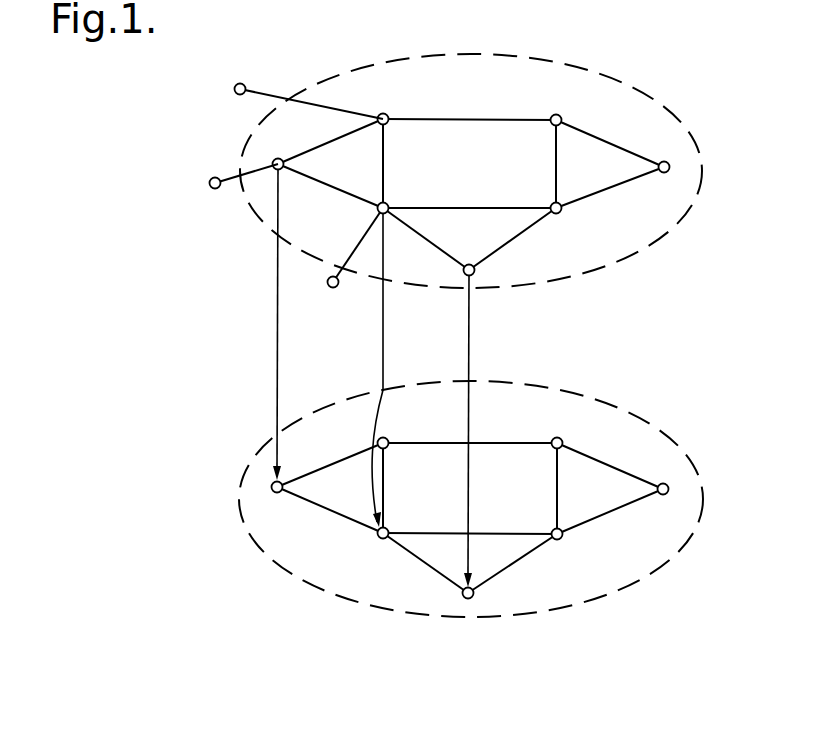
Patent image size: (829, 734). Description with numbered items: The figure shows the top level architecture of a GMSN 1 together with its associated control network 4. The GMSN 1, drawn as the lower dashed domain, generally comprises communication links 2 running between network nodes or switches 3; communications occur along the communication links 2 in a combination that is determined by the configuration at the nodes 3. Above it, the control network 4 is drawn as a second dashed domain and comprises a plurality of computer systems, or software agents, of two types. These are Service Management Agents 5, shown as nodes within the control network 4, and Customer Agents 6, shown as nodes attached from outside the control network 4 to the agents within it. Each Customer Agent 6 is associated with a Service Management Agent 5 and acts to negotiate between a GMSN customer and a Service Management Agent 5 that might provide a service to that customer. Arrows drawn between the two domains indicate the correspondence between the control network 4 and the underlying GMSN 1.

The GMSN 1 is at (645, 425).
The communication links 2 is at (613, 512).
The network nodes 3 is at (668, 487).
The control network 4 is at (645, 95).
The Service Management Agent 5 is at (670, 167).
The Customer Agent 6 is at (234, 89).